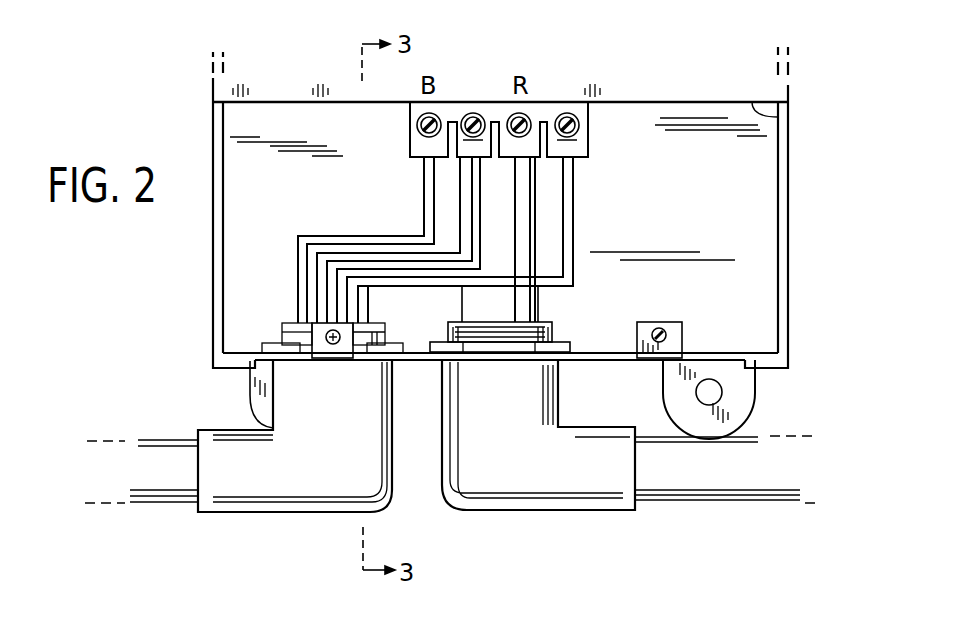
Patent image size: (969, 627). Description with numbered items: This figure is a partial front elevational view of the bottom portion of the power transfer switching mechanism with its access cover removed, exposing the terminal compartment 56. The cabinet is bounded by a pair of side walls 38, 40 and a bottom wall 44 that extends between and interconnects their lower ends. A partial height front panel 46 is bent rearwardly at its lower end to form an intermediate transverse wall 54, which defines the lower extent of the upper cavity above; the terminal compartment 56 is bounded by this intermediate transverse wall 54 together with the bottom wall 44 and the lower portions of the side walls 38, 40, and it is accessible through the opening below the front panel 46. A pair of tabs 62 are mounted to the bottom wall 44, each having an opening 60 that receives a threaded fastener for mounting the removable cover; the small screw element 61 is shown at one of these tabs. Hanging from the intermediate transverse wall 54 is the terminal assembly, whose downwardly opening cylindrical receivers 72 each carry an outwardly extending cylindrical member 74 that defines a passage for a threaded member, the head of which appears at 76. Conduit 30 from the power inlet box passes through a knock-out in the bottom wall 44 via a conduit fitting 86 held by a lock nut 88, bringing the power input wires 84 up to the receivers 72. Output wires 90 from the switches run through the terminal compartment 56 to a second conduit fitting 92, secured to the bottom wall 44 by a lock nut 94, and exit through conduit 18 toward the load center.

The conduit 18 is at (660, 500).
The conduit 30 is at (152, 453).
The side wall 38 is at (212, 222).
The side wall 40 is at (778, 165).
The bottom wall 44 is at (417, 361).
The front panel 46 is at (745, 72).
The intermediate transverse wall 54 is at (770, 117).
The terminal compartment 56 is at (760, 250).
The opening 60 is at (340, 345).
The clamp screw 61 is at (650, 330).
The tab 62 is at (322, 360).
The cylindrical receiver 72 is at (412, 140).
The cylindrical member 74 is at (432, 118).
The head of threaded member 76 is at (416, 125).
The power input wires 84 is at (428, 224).
The conduit fitting 86 is at (293, 483).
The lock nut 88 is at (262, 346).
The output wires 90 is at (530, 297).
The conduit fitting 92 is at (490, 512).
The lock nut 94 is at (560, 352).